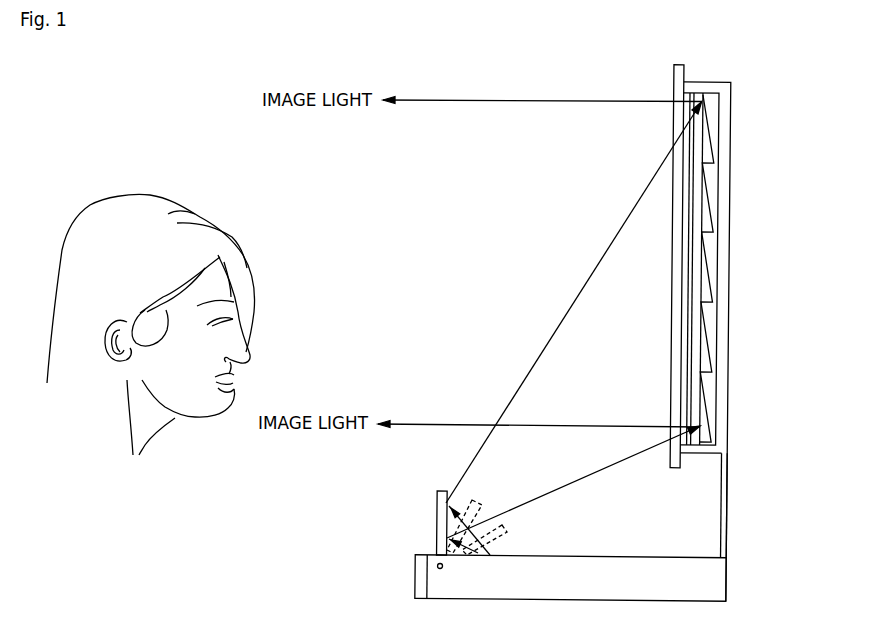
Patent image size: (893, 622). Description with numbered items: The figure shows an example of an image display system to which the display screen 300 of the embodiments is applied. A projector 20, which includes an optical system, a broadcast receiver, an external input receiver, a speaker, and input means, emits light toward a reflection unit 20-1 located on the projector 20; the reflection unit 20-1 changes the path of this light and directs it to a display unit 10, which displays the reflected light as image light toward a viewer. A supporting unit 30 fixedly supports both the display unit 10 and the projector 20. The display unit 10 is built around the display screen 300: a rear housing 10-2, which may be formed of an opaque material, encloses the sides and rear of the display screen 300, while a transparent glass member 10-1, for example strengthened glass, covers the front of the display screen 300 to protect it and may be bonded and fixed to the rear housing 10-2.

The display unit 10 is at (703, 323).
The transparent glass member 10-1 is at (676, 80).
The rear housing 10-2 is at (722, 247).
The display screen 300 is at (713, 188).
The supporting unit 30 is at (721, 526).
The projector 20 is at (418, 577).
The reflection unit 20-1 is at (440, 513).